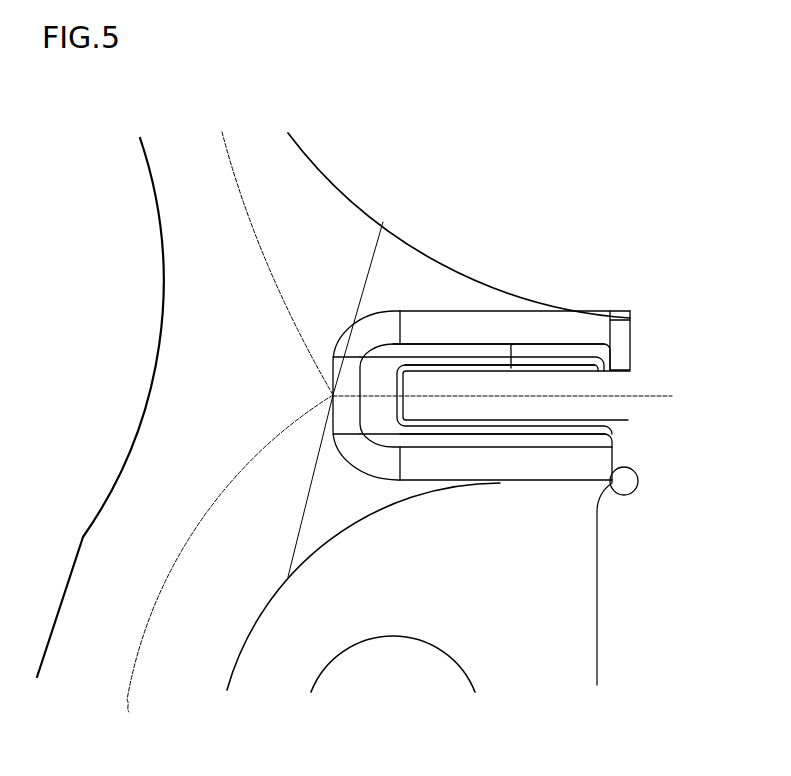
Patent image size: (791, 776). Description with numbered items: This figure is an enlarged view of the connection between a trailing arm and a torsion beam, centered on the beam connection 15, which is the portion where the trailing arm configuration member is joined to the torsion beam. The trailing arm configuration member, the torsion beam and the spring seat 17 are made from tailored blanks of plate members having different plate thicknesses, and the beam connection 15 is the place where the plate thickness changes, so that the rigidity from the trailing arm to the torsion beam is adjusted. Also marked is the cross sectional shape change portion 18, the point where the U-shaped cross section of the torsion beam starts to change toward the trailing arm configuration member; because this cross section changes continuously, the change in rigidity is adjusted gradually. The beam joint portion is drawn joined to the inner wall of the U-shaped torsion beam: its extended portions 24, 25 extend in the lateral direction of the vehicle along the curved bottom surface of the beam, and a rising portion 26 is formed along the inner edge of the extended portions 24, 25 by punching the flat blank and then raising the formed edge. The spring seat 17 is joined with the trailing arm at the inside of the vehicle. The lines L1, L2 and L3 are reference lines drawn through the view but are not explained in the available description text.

The beam connection 15 is at (383, 222).
The spring seat 17 is at (588, 642).
The cross sectional shape change portion 18 is at (612, 497).
The extended portion 24 is at (543, 351).
The extended portion 25 is at (553, 436).
The rising portion 26 is at (482, 365).
The line L1 is at (223, 565).
The line L2 is at (515, 408).
The line L3 is at (274, 251).